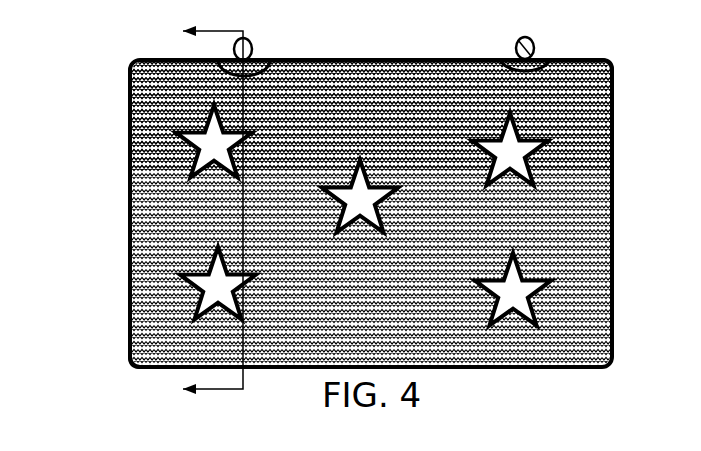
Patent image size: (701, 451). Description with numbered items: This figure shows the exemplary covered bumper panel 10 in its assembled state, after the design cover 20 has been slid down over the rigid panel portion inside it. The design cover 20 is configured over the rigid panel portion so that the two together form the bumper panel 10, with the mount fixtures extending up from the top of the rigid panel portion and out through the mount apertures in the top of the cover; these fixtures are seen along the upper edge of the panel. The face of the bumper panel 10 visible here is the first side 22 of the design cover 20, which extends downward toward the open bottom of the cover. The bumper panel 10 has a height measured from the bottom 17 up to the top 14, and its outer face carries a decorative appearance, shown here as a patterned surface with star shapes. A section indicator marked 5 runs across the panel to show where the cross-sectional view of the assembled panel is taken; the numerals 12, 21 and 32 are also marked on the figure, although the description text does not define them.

The bumper panel 10 is at (115, 82).
The body panel 12 is at (588, 212).
The top 14 is at (581, 60).
The bottom 17 is at (146, 367).
The design cover 20 is at (590, 97).
The first side 22 is at (594, 150).
The star decoration 21 is at (518, 300).
The grommet 32 is at (540, 60).
The section line 5- 5 is at (213, 211).